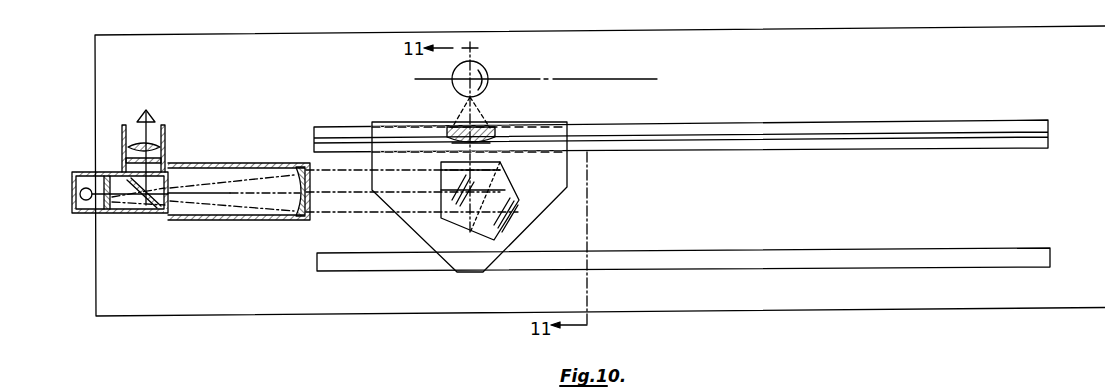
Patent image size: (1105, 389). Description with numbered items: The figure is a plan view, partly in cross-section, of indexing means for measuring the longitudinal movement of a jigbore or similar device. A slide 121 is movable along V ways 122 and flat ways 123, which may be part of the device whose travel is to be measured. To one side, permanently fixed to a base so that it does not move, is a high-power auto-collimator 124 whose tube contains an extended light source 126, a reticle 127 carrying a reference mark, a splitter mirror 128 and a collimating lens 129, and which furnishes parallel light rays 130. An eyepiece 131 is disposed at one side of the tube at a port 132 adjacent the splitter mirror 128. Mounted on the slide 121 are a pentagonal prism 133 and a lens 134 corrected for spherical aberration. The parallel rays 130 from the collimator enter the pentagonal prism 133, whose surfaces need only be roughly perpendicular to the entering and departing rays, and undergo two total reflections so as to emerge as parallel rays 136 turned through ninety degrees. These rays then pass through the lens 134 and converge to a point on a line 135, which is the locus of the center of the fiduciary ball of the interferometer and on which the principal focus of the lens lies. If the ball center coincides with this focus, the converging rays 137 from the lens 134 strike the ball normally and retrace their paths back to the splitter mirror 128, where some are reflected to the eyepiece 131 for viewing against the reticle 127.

The slide 121 is at (557, 197).
The V ways 122 is at (838, 120).
The flat ways 123 is at (746, 252).
The auto-collimator 124 is at (240, 161).
The extended light source 126 is at (86, 212).
The reticle 127 is at (121, 212).
The splitter mirror 128 is at (158, 208).
The collimating lens 129 is at (301, 219).
The parallel light rays 130 is at (328, 196).
The eyepiece 131 is at (152, 141).
The port 132 is at (164, 160).
The pentagonal prism 133 is at (520, 205).
The lens 134 is at (447, 135).
The line 135 is at (622, 75).
The parallel rays 136 is at (491, 144).
The rays 137 is at (484, 103).